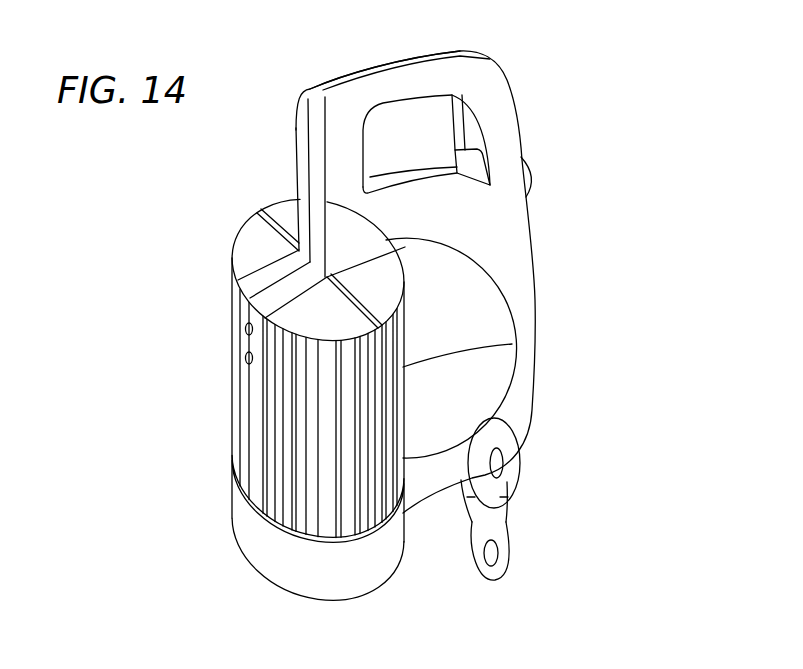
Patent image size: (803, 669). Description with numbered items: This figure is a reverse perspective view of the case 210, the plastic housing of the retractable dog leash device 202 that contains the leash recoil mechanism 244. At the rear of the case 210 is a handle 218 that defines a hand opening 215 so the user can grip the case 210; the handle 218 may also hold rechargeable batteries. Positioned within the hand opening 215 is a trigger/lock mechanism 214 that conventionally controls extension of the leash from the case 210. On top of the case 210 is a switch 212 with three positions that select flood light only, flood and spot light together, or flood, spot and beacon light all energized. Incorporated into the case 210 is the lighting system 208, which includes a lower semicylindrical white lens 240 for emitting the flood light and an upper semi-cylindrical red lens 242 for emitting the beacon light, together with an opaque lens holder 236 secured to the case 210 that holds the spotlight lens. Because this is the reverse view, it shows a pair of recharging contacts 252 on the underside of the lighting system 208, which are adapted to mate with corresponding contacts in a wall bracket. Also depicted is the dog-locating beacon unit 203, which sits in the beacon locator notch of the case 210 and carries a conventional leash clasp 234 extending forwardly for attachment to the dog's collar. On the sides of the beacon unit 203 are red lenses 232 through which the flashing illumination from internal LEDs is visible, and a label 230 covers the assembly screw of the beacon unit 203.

The retractable device 202 is at (614, 124).
The beacon unit 203 is at (537, 494).
The lighting system 208 is at (222, 540).
The case 210 is at (518, 222).
The switch 212 is at (531, 173).
The trigger/lock mechanism 214 is at (478, 165).
The hand opening 215 is at (430, 122).
The handle 218 is at (410, 55).
The label 230 is at (496, 463).
The red lenses 232 is at (512, 470).
The leash clasp 234 is at (497, 570).
The lens holder 236 is at (353, 575).
The white lens 240 is at (237, 417).
The red lens 242 is at (512, 345).
The recoil mechanism 244 is at (490, 302).
The recharging contacts 252 is at (245, 356).